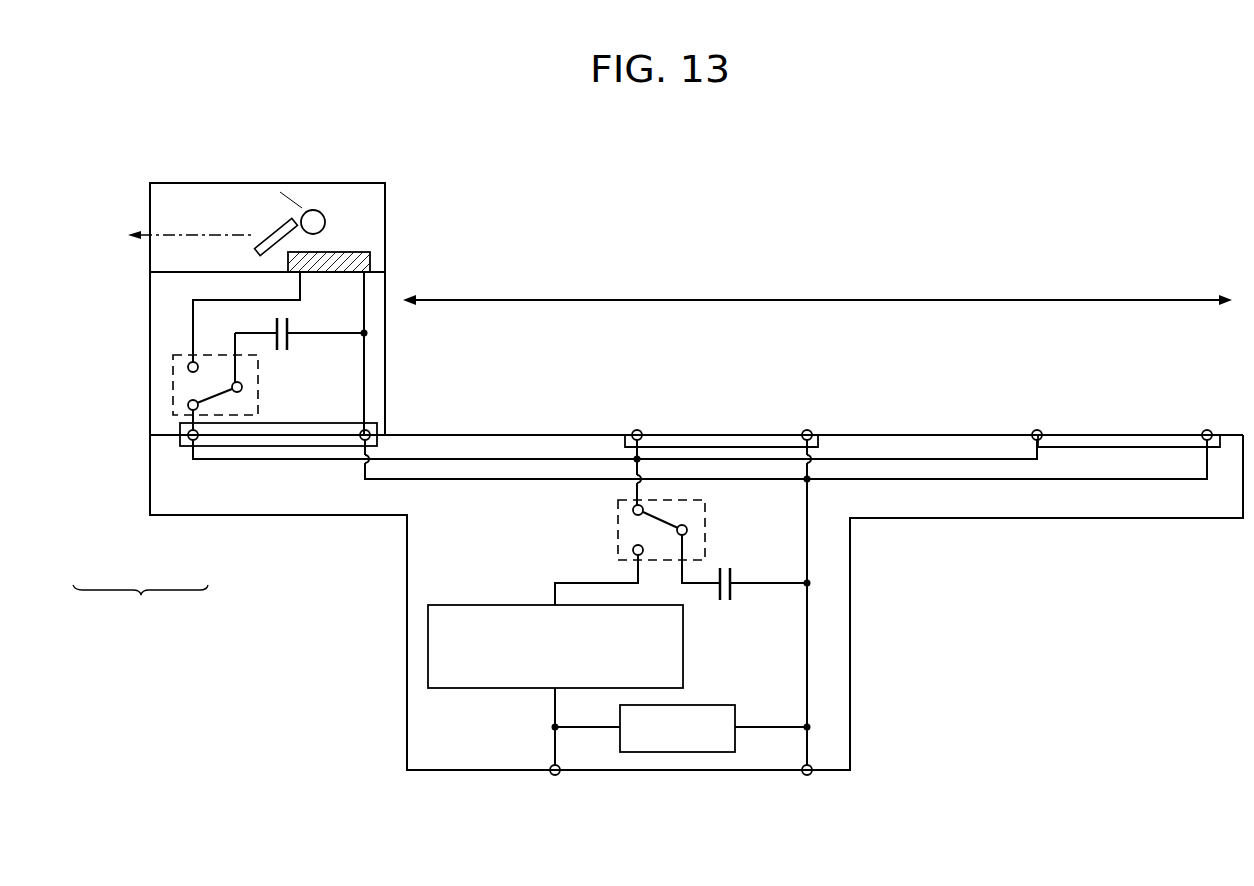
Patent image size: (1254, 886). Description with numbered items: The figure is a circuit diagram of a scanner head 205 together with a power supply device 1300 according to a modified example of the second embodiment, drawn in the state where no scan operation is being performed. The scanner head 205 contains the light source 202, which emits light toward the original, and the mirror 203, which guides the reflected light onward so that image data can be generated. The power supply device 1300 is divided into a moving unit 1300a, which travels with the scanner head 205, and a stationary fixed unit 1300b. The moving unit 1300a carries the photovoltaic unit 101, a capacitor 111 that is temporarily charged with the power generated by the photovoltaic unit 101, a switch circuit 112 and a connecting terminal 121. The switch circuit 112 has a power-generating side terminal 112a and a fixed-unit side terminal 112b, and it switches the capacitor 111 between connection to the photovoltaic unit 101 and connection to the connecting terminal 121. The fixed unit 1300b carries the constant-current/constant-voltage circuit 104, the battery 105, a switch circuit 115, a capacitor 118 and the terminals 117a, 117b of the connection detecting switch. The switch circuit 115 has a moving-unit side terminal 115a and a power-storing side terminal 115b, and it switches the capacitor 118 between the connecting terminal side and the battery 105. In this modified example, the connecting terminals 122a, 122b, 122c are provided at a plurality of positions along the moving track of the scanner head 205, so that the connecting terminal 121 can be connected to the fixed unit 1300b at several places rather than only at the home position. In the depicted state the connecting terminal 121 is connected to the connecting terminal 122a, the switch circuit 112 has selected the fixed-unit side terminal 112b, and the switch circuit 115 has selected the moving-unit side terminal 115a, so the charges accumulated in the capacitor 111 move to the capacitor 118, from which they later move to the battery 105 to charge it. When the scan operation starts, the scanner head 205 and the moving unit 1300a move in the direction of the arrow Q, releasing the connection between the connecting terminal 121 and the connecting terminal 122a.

The scanner head 205 is at (172, 183).
The mirror 203 is at (277, 226).
The light source 202 is at (313, 209).
The photovoltaic unit 101 is at (345, 252).
The capacitor 111 is at (292, 331).
The switch circuit 112 is at (205, 387).
The power-generating side terminal 112a is at (187, 367).
The fixed-unit side terminal 112b is at (187, 405).
The connecting terminal 121 is at (373, 425).
The connecting terminal 122a is at (378, 441).
The connecting terminal 122b is at (812, 435).
The connecting terminal 122c is at (1032, 440).
The power supply device 1300 is at (140, 603).
The moving unit 1300a is at (155, 425).
The fixed unit 1300b is at (205, 515).
The switch circuit 115 is at (662, 533).
The moving-unit side terminal 115a is at (633, 511).
The power-storing side terminal 115b is at (633, 551).
The capacitor 118 is at (738, 595).
The constant-current/constant-voltage circuit 104 is at (468, 690).
The battery 105 is at (700, 705).
The connection detecting switch terminal 117a is at (560, 776).
The connection detecting switch terminal 117b is at (812, 776).
The arrow Q is at (822, 297).